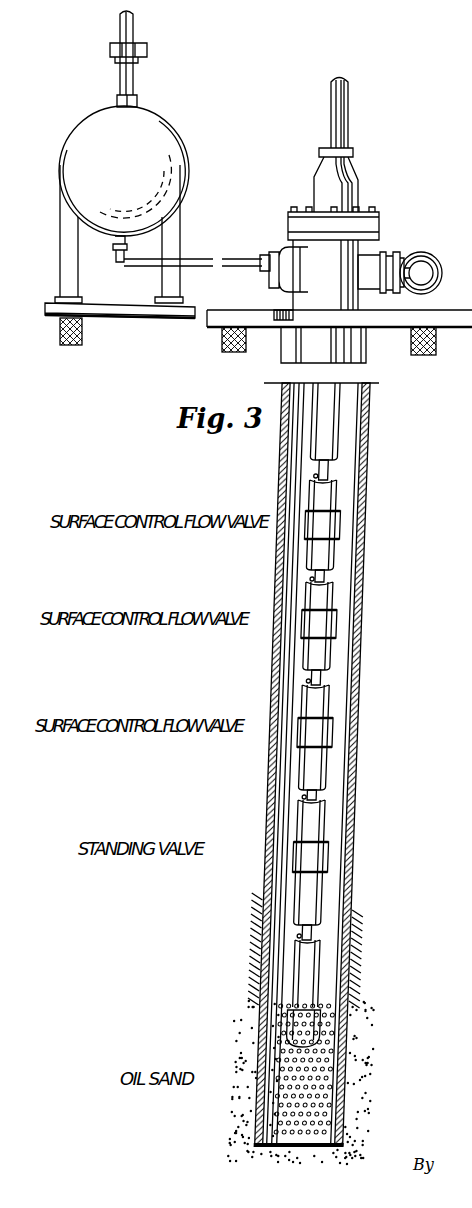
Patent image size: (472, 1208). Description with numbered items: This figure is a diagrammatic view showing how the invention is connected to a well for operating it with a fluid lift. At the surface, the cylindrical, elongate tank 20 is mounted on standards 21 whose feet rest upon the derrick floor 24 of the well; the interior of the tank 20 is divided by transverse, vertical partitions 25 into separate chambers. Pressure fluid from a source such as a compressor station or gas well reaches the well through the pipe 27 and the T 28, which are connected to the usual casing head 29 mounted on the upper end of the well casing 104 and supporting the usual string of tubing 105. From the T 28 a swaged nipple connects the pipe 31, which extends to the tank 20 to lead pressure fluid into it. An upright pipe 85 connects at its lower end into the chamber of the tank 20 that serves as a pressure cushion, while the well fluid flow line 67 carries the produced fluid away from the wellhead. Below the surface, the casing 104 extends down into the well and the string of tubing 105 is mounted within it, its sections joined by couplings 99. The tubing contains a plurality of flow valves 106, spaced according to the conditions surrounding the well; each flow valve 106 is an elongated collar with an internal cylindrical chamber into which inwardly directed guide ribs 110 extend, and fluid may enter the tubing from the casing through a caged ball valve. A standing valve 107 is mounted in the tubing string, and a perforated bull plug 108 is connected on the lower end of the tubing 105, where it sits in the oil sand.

The tank 20 is at (173, 152).
The standards 21 is at (167, 273).
The derrick floor 24 is at (133, 312).
The transverse vertical partitions 25 is at (470, 321).
The pipe 27 is at (438, 273).
The T 28 is at (431, 257).
The casing head 29 is at (329, 258).
The pipe 31 is at (195, 260).
The well fluid flow line 67 is at (336, 115).
The upright pipe 85 is at (136, 72).
The tubing coupling 99 is at (320, 678).
The well casing 104 is at (363, 570).
The string of tubing 105 is at (302, 912).
The flow valves 106 is at (327, 732).
The standing valve 107 is at (325, 855).
The perforated bull plug 108 is at (320, 1032).
The guide ribs 110 is at (459, 642).